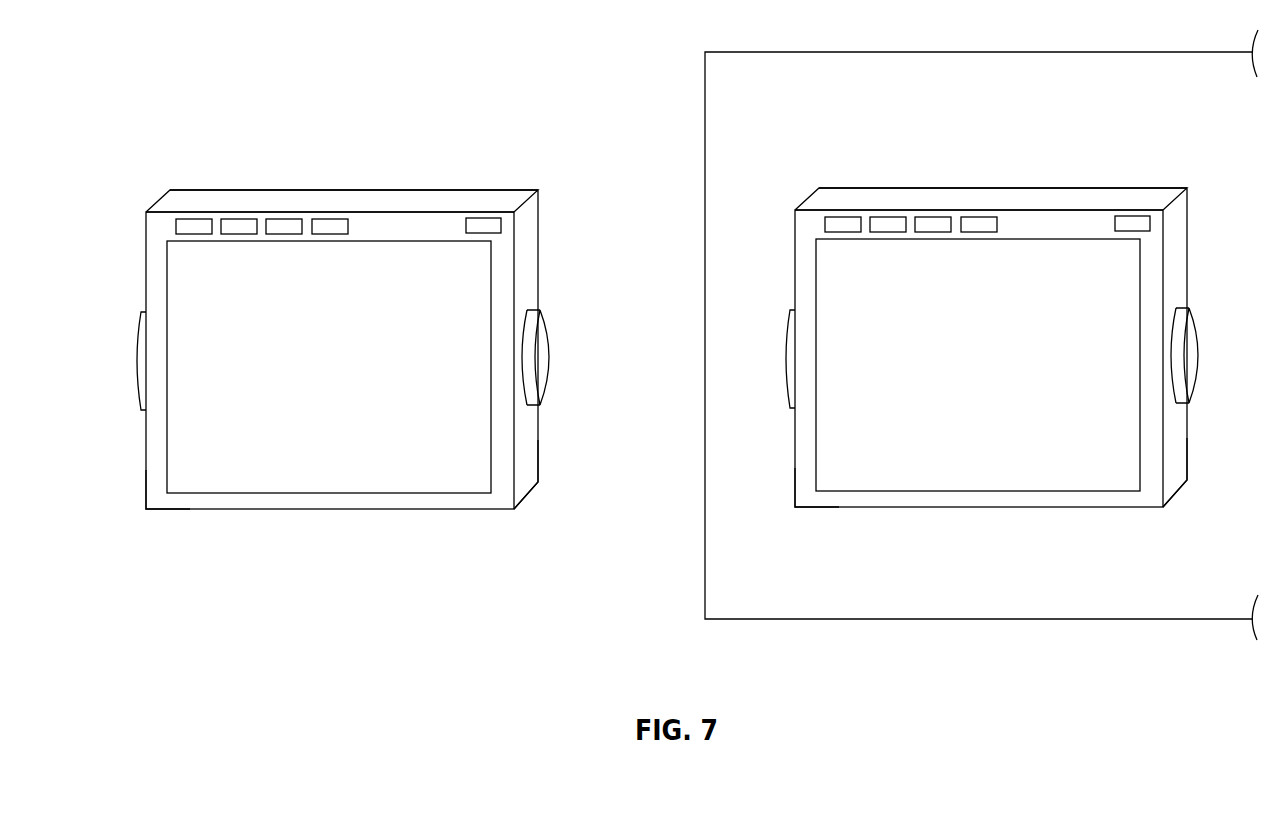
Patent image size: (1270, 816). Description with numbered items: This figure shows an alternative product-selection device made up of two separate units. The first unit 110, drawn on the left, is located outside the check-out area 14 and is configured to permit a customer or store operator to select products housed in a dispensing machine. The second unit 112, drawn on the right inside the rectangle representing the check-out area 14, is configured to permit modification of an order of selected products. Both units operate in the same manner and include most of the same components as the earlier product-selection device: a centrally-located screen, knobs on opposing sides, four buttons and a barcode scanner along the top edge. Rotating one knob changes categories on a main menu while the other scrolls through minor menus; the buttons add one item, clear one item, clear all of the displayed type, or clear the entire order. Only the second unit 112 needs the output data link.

The check-out area 14 is at (916, 620).
The first unit 110 is at (443, 173).
The second unit 112 is at (991, 308).